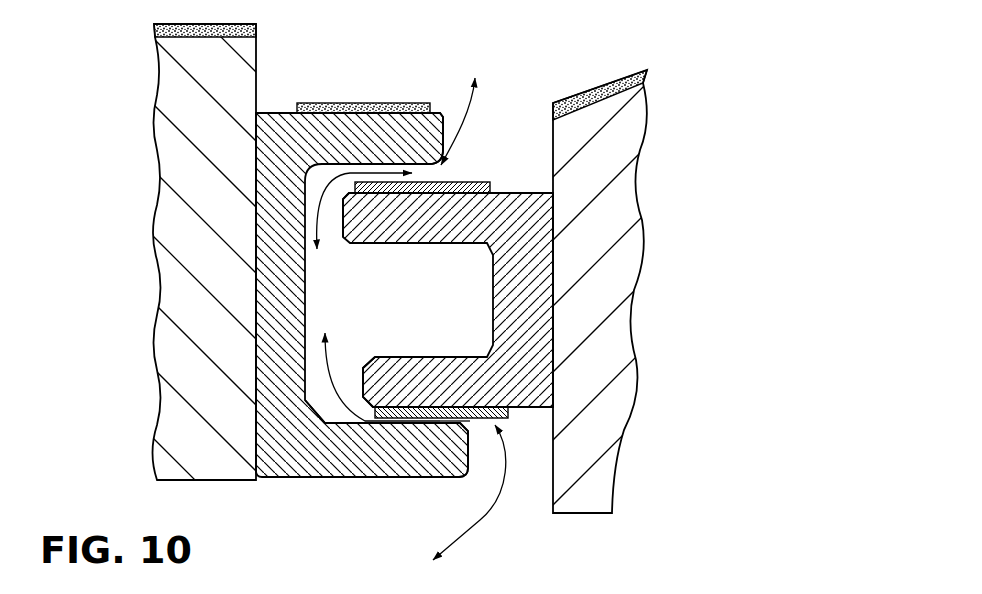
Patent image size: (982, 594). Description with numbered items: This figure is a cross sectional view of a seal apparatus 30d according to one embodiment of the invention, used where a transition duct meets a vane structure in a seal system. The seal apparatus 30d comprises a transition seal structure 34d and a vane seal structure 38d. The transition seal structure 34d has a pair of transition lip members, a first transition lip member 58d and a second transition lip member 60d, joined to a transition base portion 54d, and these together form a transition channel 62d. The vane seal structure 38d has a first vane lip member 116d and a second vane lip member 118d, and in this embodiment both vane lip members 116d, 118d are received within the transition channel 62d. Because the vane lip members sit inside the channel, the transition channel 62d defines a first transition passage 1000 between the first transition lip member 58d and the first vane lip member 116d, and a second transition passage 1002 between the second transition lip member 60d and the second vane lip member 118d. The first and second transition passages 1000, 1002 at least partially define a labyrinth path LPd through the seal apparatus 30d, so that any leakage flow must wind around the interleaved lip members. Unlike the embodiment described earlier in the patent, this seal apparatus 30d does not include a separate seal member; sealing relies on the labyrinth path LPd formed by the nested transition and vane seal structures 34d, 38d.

The seal apparatus 30d is at (449, 67).
The transition seal structure 34d is at (270, 109).
The vane seal structure 38d is at (538, 415).
The transition base portion 54d is at (270, 246).
The first transition lip member 58d is at (346, 125).
The second transition lip member 60d is at (347, 472).
The transition channel 62d is at (332, 321).
The first vane lip member 116d is at (438, 215).
The second vane lip member 118d is at (520, 407).
The first transition passage 1000 is at (459, 165).
The second transition passage 1002 is at (470, 423).
The labyrinth path LPd is at (457, 538).